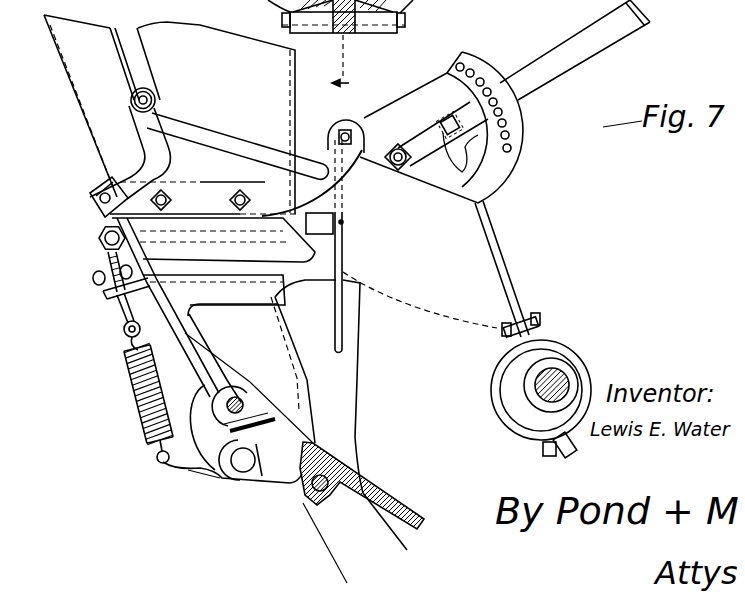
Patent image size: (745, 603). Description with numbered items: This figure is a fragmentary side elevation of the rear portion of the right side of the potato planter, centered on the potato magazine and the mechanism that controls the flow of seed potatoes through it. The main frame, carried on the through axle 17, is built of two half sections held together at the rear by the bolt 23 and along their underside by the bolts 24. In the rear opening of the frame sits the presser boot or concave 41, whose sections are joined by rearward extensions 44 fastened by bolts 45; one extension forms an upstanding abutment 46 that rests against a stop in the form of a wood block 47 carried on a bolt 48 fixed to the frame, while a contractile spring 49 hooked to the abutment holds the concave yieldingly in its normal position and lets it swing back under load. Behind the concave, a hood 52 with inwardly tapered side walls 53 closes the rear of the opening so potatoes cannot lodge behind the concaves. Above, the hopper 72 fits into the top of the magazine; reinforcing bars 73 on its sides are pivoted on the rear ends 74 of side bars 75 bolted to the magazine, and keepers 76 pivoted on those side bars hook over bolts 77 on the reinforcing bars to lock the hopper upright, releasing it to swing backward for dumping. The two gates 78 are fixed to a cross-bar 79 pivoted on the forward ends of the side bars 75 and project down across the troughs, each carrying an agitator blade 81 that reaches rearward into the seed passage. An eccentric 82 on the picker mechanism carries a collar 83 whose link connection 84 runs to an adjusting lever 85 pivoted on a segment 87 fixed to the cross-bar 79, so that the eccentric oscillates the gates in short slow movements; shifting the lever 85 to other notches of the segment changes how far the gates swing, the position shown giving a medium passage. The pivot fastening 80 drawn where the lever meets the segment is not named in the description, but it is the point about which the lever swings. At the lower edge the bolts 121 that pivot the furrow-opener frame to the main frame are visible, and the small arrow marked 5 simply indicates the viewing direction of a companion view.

The section line arrow 5 is at (347, 65).
The through axle 17 is at (558, 382).
The bolt 23 is at (99, 240).
The bolts 24 is at (405, 23).
The presser boot or concave 41 is at (357, 380).
The rearward extensions 44 is at (224, 492).
The bolts 45 is at (247, 468).
The upstanding abutment 46 is at (211, 387).
The wood block 47 is at (217, 471).
The bolt 48 is at (240, 400).
The contractile spring 49 is at (140, 395).
The hood 52 is at (214, 290).
The side walls 53 is at (233, 353).
The hopper 72 is at (169, 114).
The reinforcing bars 73 is at (133, 47).
The rear ends 74 is at (90, 199).
The side bars 75 is at (212, 221).
The keepers 76 is at (250, 147).
The bolts 77 is at (155, 95).
The gates 78 is at (343, 256).
The cross-bar 79 is at (349, 122).
The pivot bolt 80 is at (398, 148).
The agitator blade 81 is at (318, 212).
The eccentric 82 is at (522, 358).
The collar 83 is at (496, 396).
The link connection 84 is at (490, 230).
The adjusting lever 85 is at (553, 62).
The segment 87 is at (523, 140).
The bolts 121 is at (357, 476).